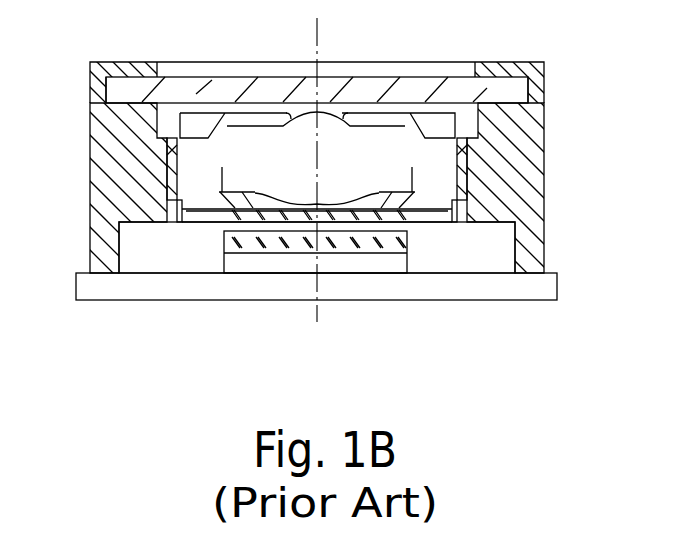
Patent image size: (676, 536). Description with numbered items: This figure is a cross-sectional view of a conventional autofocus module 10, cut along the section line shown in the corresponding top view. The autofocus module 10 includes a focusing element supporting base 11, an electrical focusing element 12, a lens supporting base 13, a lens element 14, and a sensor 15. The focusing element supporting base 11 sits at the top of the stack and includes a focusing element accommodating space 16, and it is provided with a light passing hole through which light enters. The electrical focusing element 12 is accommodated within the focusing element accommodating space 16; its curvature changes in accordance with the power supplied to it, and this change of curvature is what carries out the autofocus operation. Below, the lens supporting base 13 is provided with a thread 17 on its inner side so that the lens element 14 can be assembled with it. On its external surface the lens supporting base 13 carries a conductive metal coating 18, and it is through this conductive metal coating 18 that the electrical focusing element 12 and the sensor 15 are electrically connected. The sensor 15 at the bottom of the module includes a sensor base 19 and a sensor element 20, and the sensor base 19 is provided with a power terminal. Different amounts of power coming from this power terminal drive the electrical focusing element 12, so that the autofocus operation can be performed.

The autofocus module 10 is at (66, 37).
The focusing element supporting base 11 is at (549, 62).
The electrical focusing element 12 is at (455, 93).
The lens supporting base 13 is at (527, 158).
The lens element 14 is at (428, 120).
The sensor 15 is at (493, 347).
The focusing element accommodating space 16 is at (535, 73).
The thread 17 is at (462, 188).
The conductive metal coating 18 is at (543, 236).
The sensor base 19 is at (455, 285).
The sensor element 20 is at (355, 242).